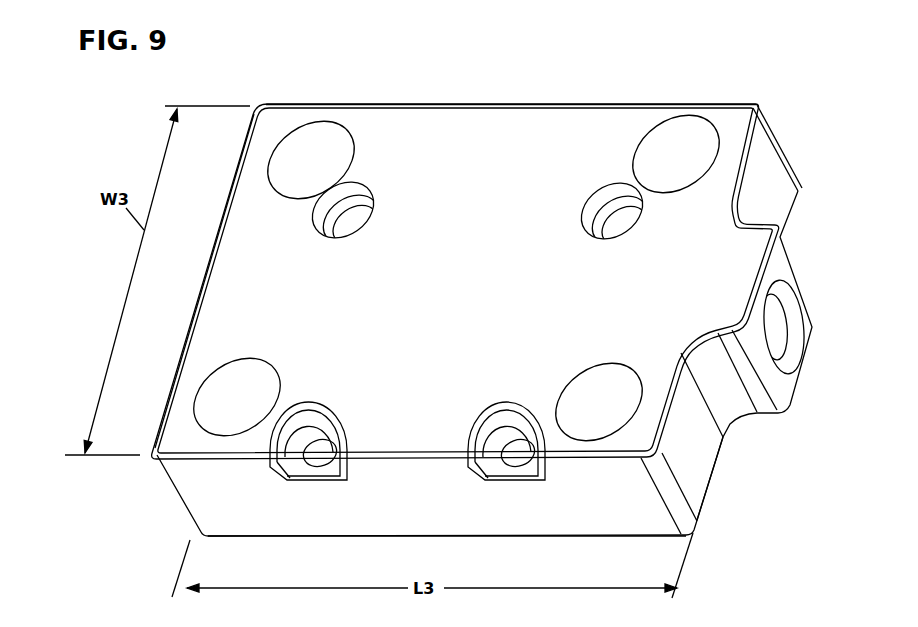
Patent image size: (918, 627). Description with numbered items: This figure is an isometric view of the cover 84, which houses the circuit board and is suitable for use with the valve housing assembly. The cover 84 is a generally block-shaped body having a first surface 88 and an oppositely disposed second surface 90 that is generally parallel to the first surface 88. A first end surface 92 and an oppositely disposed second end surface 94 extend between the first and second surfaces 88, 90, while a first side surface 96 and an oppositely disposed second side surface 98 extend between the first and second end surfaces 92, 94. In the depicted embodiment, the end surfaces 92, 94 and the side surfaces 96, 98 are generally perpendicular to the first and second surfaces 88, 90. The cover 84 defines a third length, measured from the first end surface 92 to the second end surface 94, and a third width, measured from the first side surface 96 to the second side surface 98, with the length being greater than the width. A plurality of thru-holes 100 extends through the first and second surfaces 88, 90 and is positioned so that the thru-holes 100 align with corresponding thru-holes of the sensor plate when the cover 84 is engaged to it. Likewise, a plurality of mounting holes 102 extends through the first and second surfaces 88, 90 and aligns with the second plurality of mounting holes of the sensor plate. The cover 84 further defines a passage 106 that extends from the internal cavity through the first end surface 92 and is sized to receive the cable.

The cover 84 is at (330, 88).
The first surface 88 is at (540, 537).
The second surface 90 is at (472, 288).
The first end surface 92 is at (764, 198).
The second end surface 94 is at (203, 298).
The first side surface 96 is at (418, 513).
The second side surface 98 is at (559, 106).
The thru-holes 100 is at (613, 362).
The mounting holes 102 is at (593, 228).
The passage 106 is at (770, 322).